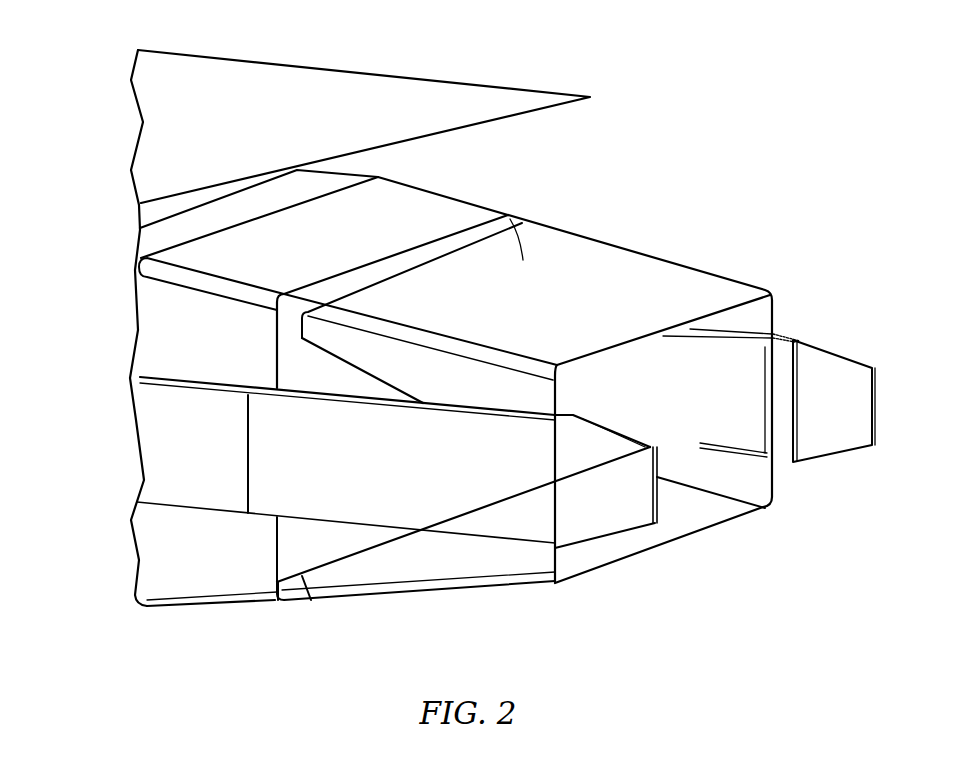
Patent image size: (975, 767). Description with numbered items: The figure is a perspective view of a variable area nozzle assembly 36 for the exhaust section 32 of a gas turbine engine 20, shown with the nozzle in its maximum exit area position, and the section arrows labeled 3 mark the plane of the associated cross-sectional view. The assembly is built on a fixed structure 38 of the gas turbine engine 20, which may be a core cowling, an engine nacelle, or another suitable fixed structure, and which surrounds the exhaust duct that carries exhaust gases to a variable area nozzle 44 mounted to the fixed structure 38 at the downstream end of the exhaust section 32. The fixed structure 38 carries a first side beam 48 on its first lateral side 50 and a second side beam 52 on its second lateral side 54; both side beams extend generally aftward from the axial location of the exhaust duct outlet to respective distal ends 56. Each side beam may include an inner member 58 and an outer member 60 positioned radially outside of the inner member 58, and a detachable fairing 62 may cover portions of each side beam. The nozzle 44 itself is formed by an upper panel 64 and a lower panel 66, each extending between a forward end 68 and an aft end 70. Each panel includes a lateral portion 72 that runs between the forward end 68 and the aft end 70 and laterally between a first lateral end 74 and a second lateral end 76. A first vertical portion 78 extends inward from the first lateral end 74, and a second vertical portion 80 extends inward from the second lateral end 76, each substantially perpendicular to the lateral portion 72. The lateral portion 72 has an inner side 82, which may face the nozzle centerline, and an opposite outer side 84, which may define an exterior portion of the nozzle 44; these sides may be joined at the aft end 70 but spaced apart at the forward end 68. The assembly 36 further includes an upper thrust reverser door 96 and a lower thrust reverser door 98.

The gas turbine engine 20 is at (94, 86).
The exhaust section 32 is at (608, 96).
The variable area nozzle assembly 36 is at (800, 85).
The fixed structure 38 is at (168, 311).
The variable area nozzle 44 is at (687, 228).
The first side beam 48 is at (322, 540).
The first lateral side 50 is at (126, 507).
The second side beam 52 is at (746, 370).
The second lateral side 54 is at (783, 283).
The distal end 56 is at (877, 408).
The inner member 58 is at (750, 418).
The outer member 60 is at (357, 540).
The detachable fairing 62 is at (836, 383).
The upper panel 64 is at (574, 285).
The lower panel 66 is at (606, 569).
The forward end 68 is at (534, 220).
The aft end 70 is at (764, 285).
The lateral portion 72 is at (508, 215).
The first lateral end 74 is at (447, 398).
The second lateral end 76 is at (721, 267).
The first vertical portion 78 is at (453, 377).
The second vertical portion 80 is at (772, 310).
The inner side 82 is at (634, 543).
The outer side 84 is at (623, 280).
The upper thrust reverser door 96 is at (403, 265).
The lower thrust reverser door 98 is at (293, 590).
The section line 3- 3 is at (108, 364).